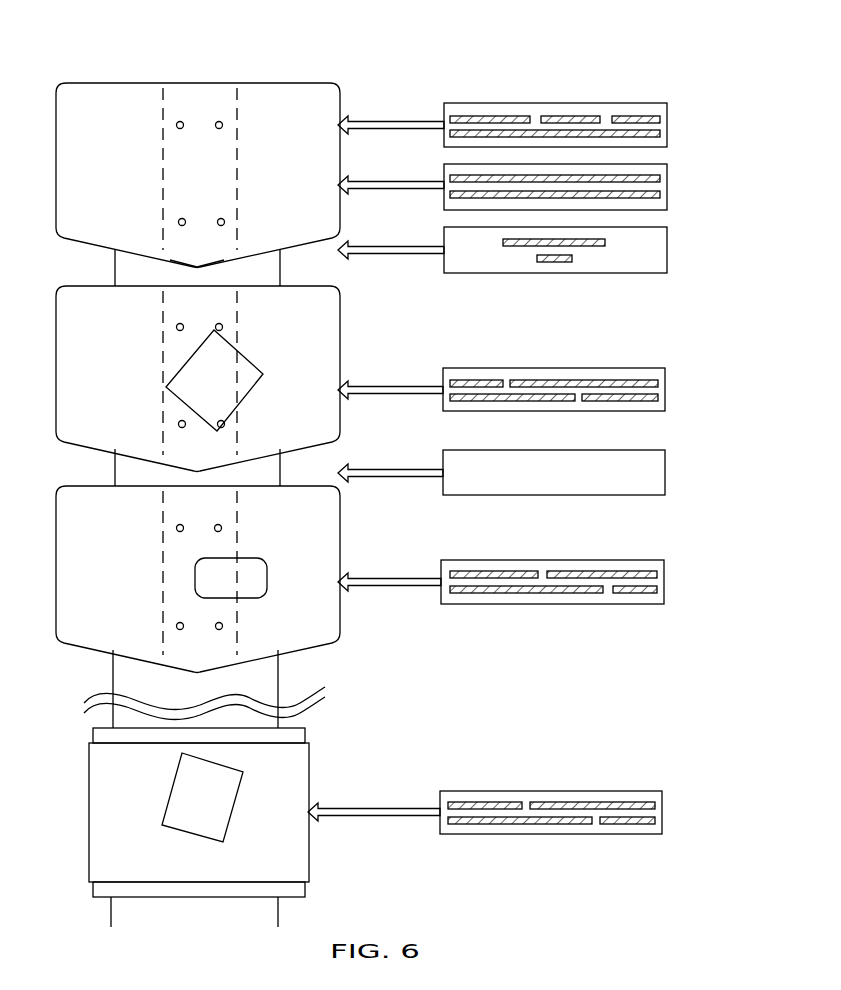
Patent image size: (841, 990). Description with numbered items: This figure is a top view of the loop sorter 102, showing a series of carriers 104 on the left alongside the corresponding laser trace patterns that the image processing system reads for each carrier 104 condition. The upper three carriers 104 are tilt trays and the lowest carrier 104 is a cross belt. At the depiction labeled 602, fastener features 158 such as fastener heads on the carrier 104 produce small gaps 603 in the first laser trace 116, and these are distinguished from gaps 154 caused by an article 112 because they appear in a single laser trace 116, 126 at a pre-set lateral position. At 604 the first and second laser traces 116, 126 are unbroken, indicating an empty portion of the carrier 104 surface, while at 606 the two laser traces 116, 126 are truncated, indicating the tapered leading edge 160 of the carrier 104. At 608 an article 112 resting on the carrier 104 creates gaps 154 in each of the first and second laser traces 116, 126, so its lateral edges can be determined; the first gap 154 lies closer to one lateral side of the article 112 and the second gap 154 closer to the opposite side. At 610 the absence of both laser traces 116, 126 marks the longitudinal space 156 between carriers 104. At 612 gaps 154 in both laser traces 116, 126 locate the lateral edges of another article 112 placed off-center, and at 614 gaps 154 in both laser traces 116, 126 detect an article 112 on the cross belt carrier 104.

The loop sorter 102 is at (314, 65).
The carrier 104 is at (341, 107).
The article 112 is at (263, 374).
The first laser trace 116 is at (660, 119).
The second laser trace 126 is at (660, 134).
The gap 154 is at (509, 376).
The longitudinal space 156 is at (50, 469).
The fastener feature 158 is at (177, 120).
The tapered leading edge 160 is at (180, 265).
The fastener detection depiction 602 is at (575, 101).
The gap 603 is at (537, 111).
The unbroken trace depiction 604 is at (444, 170).
The truncated trace depiction 606 is at (444, 233).
The article detection depiction 608 is at (575, 366).
The carrier space detection depiction 610 is at (444, 455).
The off-center article detection depiction 612 is at (572, 558).
The cross belt article detection depiction 614 is at (570, 790).